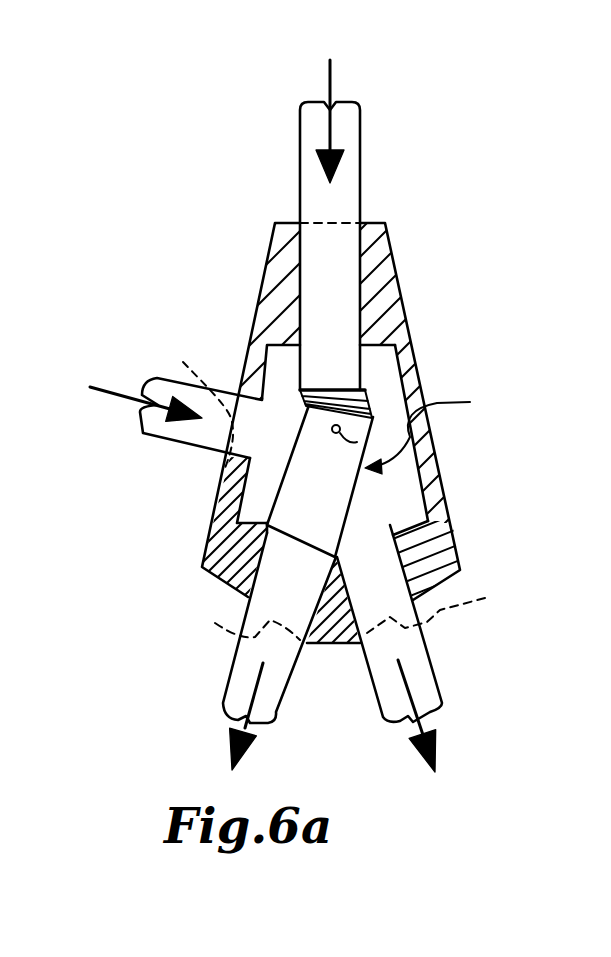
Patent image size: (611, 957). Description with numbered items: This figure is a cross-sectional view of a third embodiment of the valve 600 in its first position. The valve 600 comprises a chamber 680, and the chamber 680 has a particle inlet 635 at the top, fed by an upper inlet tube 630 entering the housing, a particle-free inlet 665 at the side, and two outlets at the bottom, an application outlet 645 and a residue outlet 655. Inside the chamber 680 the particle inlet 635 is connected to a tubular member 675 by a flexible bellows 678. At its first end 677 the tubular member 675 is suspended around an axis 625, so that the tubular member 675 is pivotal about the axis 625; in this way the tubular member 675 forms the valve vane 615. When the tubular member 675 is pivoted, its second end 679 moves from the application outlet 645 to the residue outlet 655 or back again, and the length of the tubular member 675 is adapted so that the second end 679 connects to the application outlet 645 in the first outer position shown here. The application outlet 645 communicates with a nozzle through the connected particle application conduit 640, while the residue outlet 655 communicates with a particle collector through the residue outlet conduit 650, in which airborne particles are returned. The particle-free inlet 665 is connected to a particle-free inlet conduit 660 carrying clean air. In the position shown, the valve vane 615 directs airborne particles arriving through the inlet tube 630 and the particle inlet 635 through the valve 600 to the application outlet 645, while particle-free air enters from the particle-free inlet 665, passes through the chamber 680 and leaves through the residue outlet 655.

The valve 600 is at (382, 300).
The inlet tube 630 is at (343, 136).
The particle inlet 635 is at (333, 222).
The particle-free inlet conduit 660 is at (187, 431).
The particle-free inlet 665 is at (191, 401).
The tubular member 675 is at (306, 485).
The first end 677 is at (327, 418).
The flexible bellows 678 is at (372, 398).
The axis 625 is at (357, 442).
The valve vane 615 is at (470, 402).
The chamber 680 is at (432, 492).
The second end 679 is at (292, 547).
The particle application conduit 640 is at (245, 685).
The residue outlet conduit 650 is at (428, 660).
The application outlet 645 is at (235, 617).
The residue outlet 655 is at (448, 608).